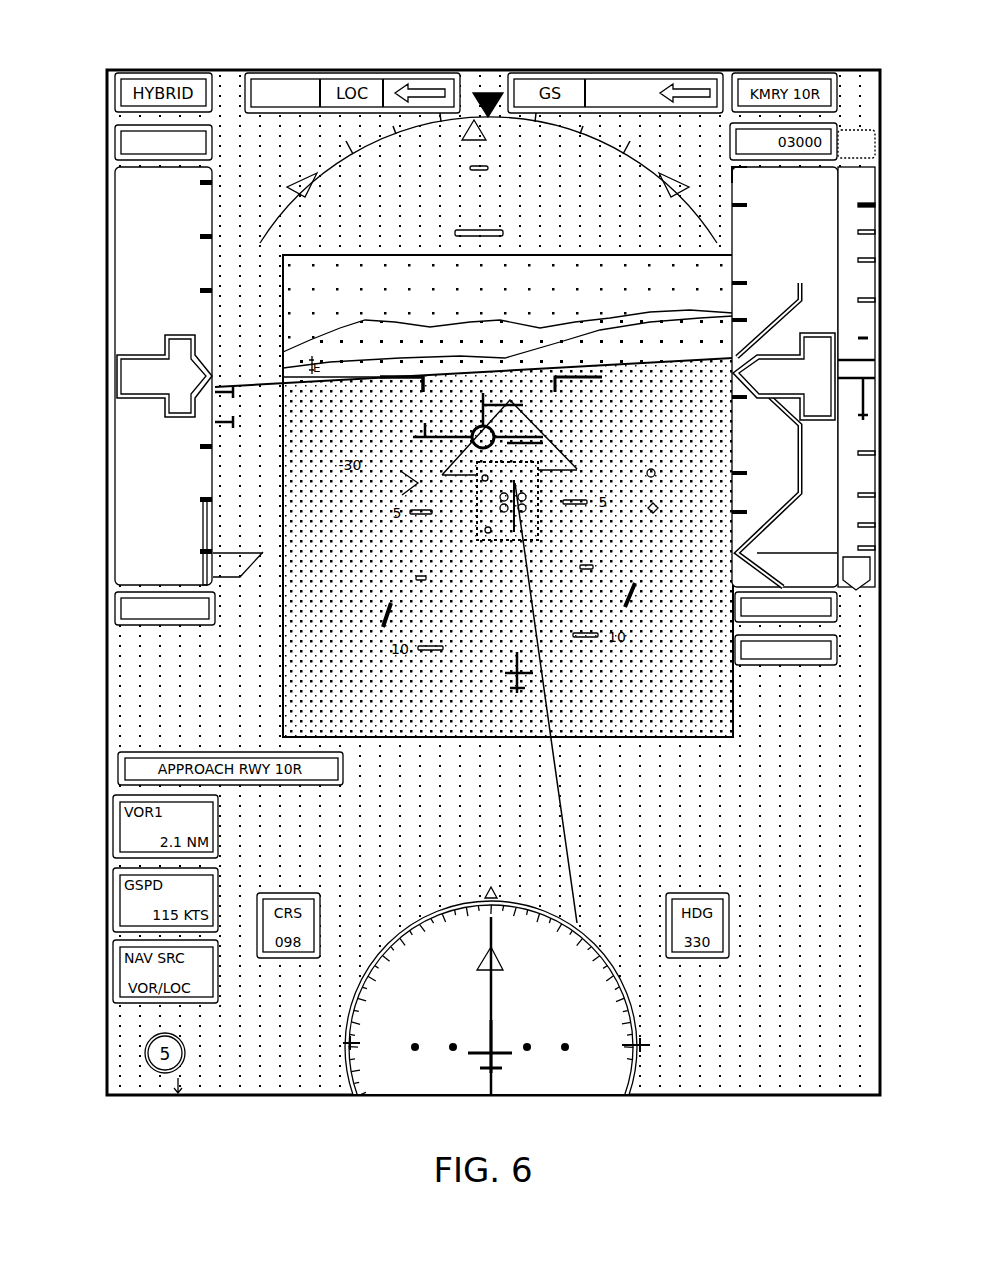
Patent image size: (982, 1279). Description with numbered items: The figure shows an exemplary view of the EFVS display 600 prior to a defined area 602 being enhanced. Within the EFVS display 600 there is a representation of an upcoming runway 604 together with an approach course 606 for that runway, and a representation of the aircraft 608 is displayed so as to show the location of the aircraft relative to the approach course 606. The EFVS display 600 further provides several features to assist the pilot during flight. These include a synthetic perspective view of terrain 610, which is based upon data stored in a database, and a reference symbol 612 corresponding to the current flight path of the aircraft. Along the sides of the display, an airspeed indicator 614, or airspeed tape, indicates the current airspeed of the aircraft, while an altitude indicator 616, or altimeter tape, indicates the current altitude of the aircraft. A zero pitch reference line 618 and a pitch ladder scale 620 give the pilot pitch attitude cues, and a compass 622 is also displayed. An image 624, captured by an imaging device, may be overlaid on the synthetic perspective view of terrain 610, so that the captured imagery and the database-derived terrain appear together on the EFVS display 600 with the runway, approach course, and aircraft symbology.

The EFVS display 600 is at (234, 68).
The defined area 602 is at (540, 526).
The representation of an upcoming runway 604 is at (545, 410).
The approach course 606 is at (565, 808).
The representation of the aircraft 608 is at (510, 680).
The synthetic perspective view of terrain 610 is at (822, 816).
The reference symbol 612 is at (453, 427).
The airspeed indicator 614 is at (122, 293).
The altitude indicator 616 is at (838, 280).
The zero pitch reference line 618 is at (384, 398).
The pitch ladder scale 620 is at (480, 232).
The compass 622 is at (642, 1030).
The image 624 is at (437, 740).